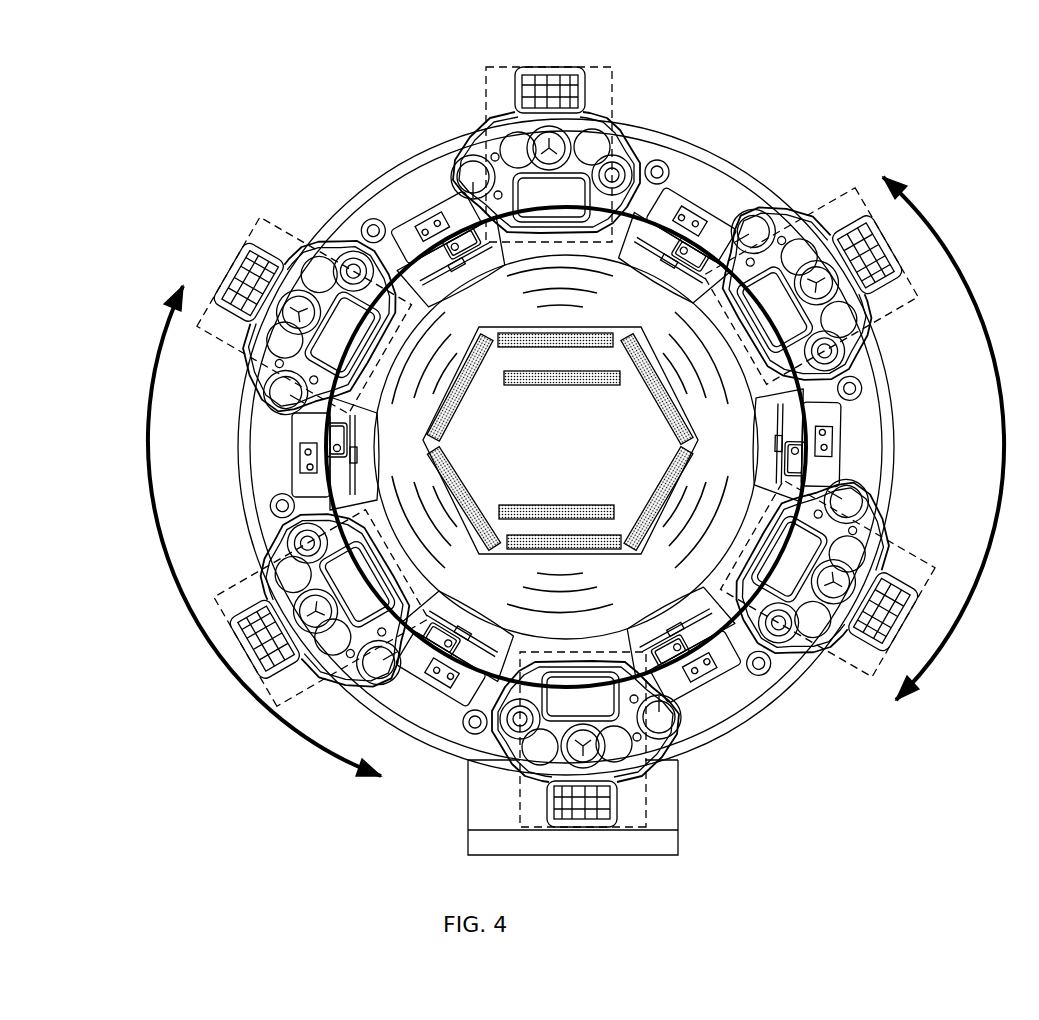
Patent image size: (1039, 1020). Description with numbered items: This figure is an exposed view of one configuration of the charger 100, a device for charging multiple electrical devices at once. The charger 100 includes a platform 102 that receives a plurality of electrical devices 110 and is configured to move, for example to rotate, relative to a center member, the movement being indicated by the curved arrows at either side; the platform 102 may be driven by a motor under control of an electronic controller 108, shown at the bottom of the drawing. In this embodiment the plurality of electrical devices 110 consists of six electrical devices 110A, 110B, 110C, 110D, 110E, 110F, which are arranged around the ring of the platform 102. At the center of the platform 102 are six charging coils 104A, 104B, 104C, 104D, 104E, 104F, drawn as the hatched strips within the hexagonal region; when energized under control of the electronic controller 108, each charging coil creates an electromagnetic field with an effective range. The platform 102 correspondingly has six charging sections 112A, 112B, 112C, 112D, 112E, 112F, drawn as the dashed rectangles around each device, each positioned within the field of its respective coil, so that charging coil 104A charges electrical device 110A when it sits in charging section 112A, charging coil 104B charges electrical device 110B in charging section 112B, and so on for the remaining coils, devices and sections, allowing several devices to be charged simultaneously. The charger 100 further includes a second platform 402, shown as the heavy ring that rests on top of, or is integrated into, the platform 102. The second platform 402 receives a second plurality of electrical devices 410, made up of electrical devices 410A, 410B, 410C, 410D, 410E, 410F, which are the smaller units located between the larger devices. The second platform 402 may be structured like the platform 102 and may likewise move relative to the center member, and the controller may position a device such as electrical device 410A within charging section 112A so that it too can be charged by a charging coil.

The charger 100 is at (217, 107).
The platform 102 is at (417, 742).
The charging coil 104A is at (590, 549).
The charging coil 104B is at (640, 497).
The charging coil 104C is at (657, 422).
The charging coil 104D is at (580, 347).
The charging coil 104E is at (460, 420).
The charging coil 104F is at (475, 492).
The electronic controller 108 is at (480, 837).
The plurality of electrical devices 110 is at (872, 305).
The electrical device 110A is at (627, 747).
The electrical device 110B is at (841, 574).
The electrical device 110C is at (862, 269).
The electrical device 110D is at (560, 130).
The electrical device 110E is at (273, 284).
The electrical device 110F is at (265, 620).
The charging section 112A is at (645, 815).
The charging section 112B is at (873, 545).
The charging section 112C is at (872, 312).
The charging section 112D is at (537, 82).
The charging section 112E is at (250, 265).
The charging section 112F is at (251, 574).
The second platform 402 is at (320, 417).
The second plurality of electrical devices 410 is at (405, 217).
The electrical device 410A is at (680, 698).
The electrical device 410B is at (840, 408).
The electrical device 410C is at (730, 225).
The electrical device 410D is at (483, 207).
The electrical device 410E is at (290, 452).
The electrical device 410F is at (430, 687).